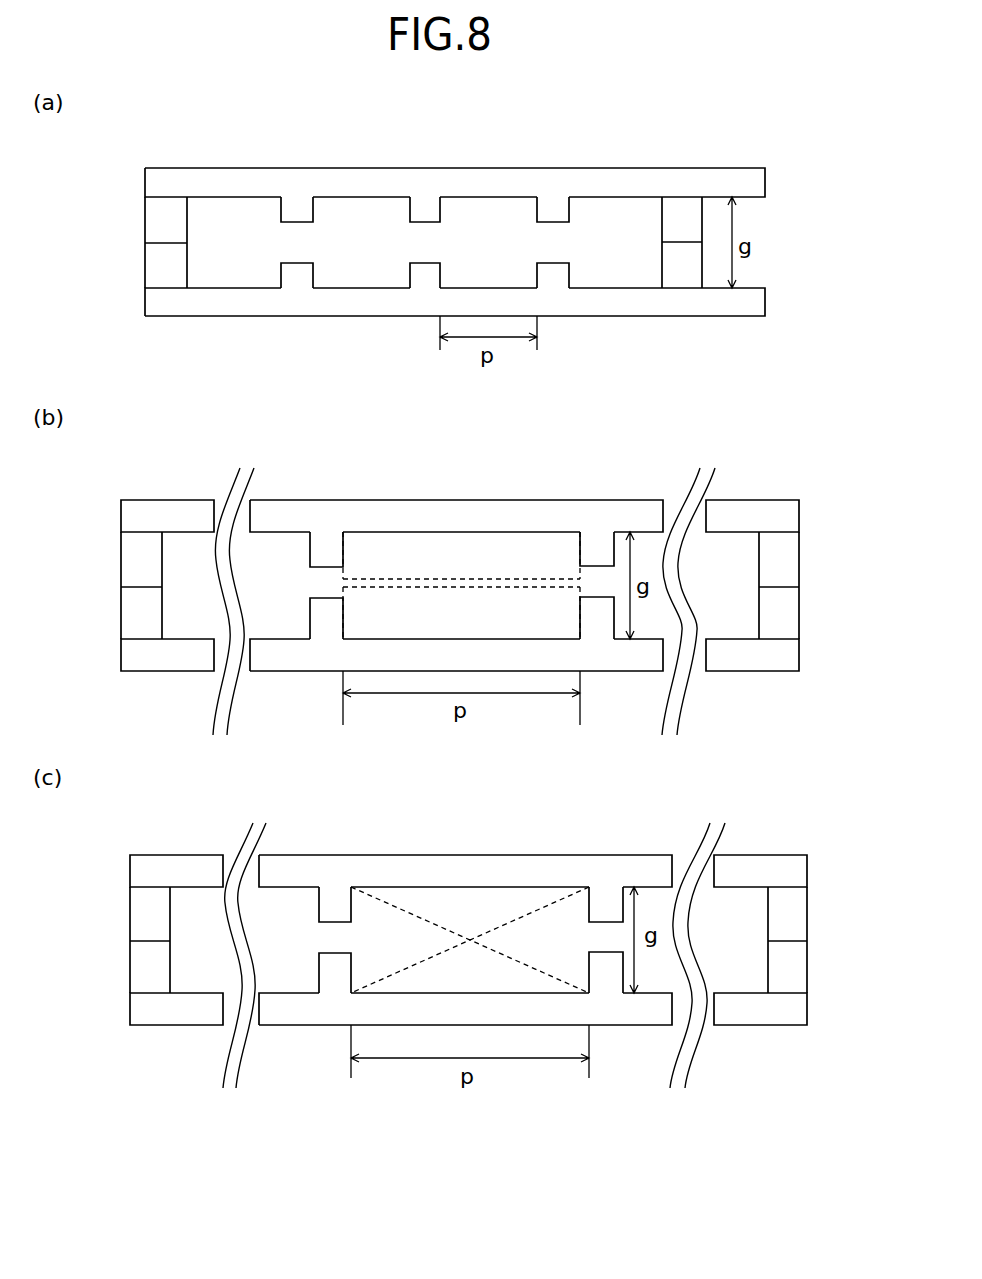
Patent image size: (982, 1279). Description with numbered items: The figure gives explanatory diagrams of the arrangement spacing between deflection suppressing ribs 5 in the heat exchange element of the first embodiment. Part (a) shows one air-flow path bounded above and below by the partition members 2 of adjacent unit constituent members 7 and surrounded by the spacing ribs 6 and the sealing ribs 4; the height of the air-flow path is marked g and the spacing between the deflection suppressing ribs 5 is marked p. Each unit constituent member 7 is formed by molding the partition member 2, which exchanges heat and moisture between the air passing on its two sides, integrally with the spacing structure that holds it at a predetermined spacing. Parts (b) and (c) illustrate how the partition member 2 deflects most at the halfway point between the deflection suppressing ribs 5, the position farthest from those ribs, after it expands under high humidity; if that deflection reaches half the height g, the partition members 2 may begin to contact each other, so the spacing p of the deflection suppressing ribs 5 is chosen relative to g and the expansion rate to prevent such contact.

The partition member 2 is at (490, 196).
The sealing rib 4 is at (165, 210).
The deflection suppressing rib 5 is at (288, 205).
The spacing rib 6 is at (683, 207).
The unit constituent member 7 is at (170, 182).